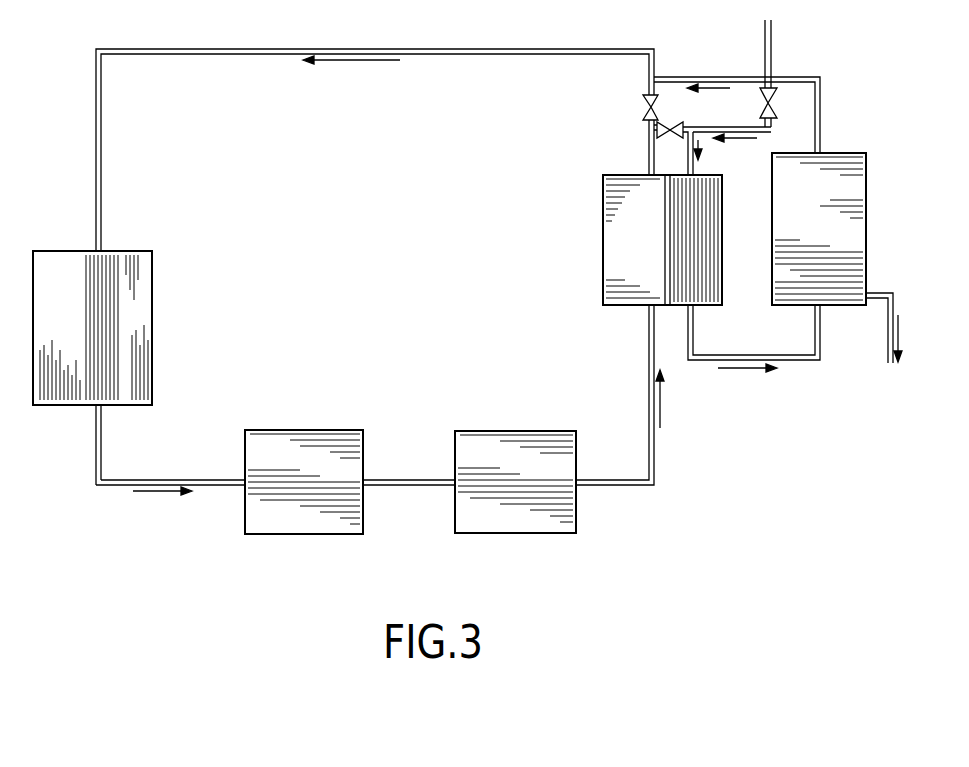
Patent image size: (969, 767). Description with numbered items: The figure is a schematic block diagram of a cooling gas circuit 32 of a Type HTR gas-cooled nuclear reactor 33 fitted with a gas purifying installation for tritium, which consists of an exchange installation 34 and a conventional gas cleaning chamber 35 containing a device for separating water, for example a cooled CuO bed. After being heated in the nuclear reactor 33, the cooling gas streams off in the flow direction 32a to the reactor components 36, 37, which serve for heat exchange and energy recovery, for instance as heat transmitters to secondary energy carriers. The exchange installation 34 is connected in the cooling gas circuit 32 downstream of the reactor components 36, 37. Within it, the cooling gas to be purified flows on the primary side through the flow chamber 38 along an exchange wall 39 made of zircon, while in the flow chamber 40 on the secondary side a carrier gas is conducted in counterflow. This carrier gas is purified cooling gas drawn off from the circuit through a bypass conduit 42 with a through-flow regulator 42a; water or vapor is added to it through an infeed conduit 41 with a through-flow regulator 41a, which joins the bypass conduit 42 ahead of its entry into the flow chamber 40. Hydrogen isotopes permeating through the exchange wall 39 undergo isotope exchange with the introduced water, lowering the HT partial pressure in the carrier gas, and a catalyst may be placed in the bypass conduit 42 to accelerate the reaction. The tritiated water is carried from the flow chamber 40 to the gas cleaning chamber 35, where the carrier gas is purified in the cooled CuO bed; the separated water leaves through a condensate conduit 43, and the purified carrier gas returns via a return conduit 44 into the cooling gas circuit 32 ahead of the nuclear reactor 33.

The cooling gas circuit 32 is at (97, 133).
The flow direction 32a is at (182, 480).
The nuclear reactor 33 is at (70, 278).
The exchange installation 34 is at (642, 240).
The gas cleaning chamber 35 is at (798, 226).
The reactor component 36 is at (300, 468).
The reactor component 37 is at (480, 473).
The flow chamber 38 is at (636, 195).
The exchange wall 39 is at (666, 258).
The flow chamber 40 is at (697, 228).
The infeed conduit 41 is at (765, 30).
The through-flow regulator 41a is at (772, 103).
The bypass conduit 42 is at (698, 146).
The through-flow regulator 42a is at (659, 100).
The condensate conduit 43 is at (890, 320).
The return conduit 44 is at (821, 120).